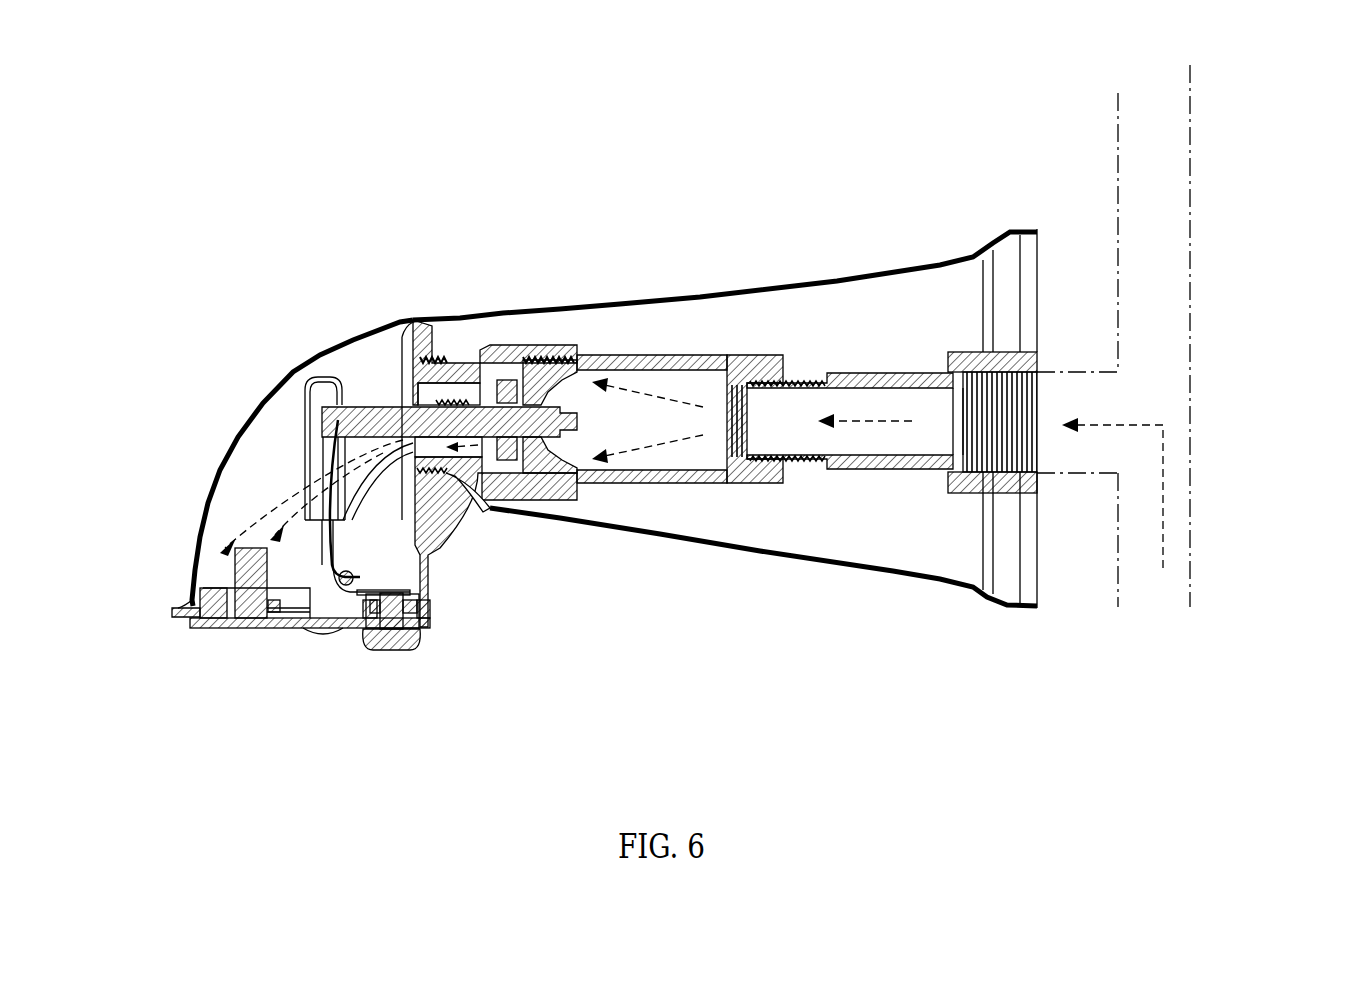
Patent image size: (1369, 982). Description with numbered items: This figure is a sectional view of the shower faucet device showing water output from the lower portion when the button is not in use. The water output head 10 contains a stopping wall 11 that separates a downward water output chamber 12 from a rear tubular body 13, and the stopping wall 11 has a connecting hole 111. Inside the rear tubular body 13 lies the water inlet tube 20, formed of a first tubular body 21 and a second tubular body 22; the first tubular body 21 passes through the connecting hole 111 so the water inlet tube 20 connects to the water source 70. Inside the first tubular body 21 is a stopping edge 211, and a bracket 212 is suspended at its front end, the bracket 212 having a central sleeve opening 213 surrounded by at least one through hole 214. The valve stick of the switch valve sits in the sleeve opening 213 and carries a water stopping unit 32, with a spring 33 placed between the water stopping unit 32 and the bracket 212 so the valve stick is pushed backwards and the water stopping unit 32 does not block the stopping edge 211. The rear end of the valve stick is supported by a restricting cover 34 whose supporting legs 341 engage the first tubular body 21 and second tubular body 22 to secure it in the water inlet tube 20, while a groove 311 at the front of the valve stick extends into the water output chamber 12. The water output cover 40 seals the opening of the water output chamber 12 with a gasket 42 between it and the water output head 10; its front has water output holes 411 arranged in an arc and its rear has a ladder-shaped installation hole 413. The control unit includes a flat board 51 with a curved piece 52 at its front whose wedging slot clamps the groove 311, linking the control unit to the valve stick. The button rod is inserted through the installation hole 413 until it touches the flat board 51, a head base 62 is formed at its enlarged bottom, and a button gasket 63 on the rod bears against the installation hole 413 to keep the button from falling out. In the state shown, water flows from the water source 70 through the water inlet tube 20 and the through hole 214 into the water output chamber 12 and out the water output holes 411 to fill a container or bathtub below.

The water output head 10 is at (1060, 597).
The stopping wall 11 is at (589, 394).
The connecting hole 111 is at (435, 362).
The water output chamber 12 is at (247, 480).
The rear tubular body 13 is at (828, 270).
The water inlet tube 20 is at (907, 410).
The first tubular body 21 is at (453, 532).
The stopping edge 211 is at (477, 482).
The bracket 212 is at (413, 337).
The sleeve opening 213 is at (433, 398).
The through hole 214 is at (410, 457).
The second tubular body 22 is at (1007, 350).
The groove 311 is at (323, 417).
The water stopping unit 32 is at (560, 452).
The spring 33 is at (512, 377).
The restricting cover 34 is at (612, 394).
The supporting legs 341 is at (520, 343).
The water output cover 40 is at (321, 608).
The water output holes 411 is at (228, 592).
The installation hole 413 is at (420, 627).
The gasket 42 is at (172, 612).
The flat board 51 is at (372, 587).
The curved piece 52 is at (325, 448).
The head base 62 is at (392, 645).
The button gasket 63 is at (420, 600).
The water source 70 is at (1208, 465).